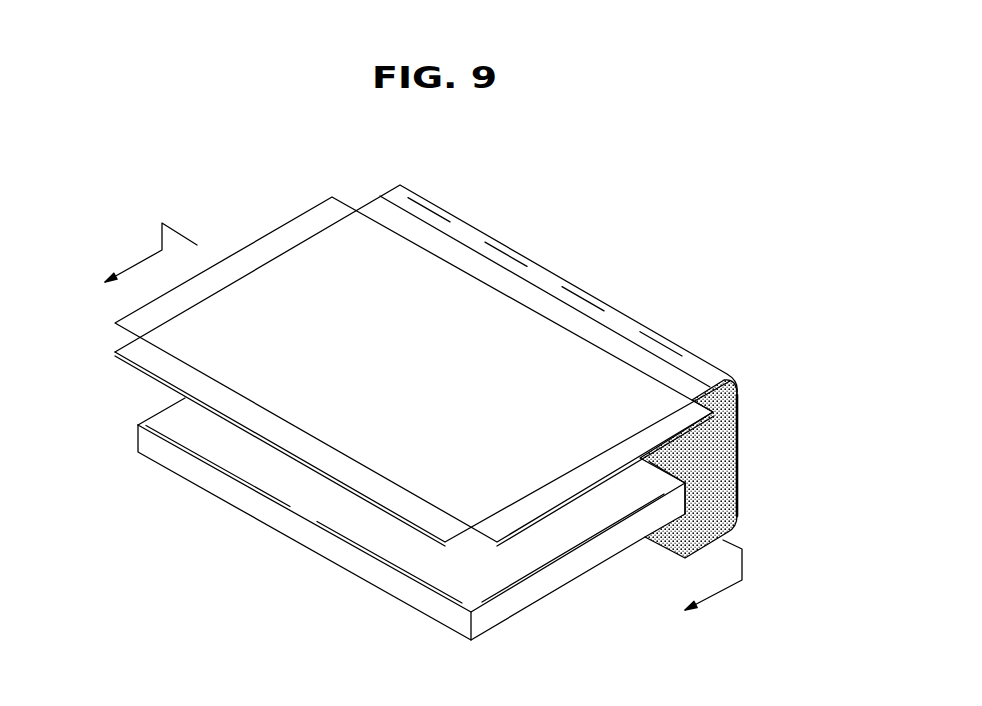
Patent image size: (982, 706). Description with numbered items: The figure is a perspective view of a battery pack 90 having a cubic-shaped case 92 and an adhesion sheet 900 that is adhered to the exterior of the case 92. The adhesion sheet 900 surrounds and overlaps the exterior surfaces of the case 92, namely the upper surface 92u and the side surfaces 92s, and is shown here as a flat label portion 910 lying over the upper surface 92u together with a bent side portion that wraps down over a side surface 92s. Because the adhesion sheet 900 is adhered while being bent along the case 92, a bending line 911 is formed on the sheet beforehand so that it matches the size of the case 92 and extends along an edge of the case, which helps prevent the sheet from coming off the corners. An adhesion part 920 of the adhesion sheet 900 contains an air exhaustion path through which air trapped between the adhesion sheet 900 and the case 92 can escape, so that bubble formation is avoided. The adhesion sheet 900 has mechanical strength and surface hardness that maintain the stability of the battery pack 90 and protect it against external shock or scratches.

The battery pack 90 is at (698, 155).
The adhesion sheet 900 is at (771, 303).
The label body (upper portion) 910 is at (636, 398).
The bending line 911 is at (632, 337).
The adhesion part 920 is at (724, 426).
The case 92 is at (542, 592).
The upper surface 92u is at (398, 543).
The side surfaces 92s is at (408, 592).